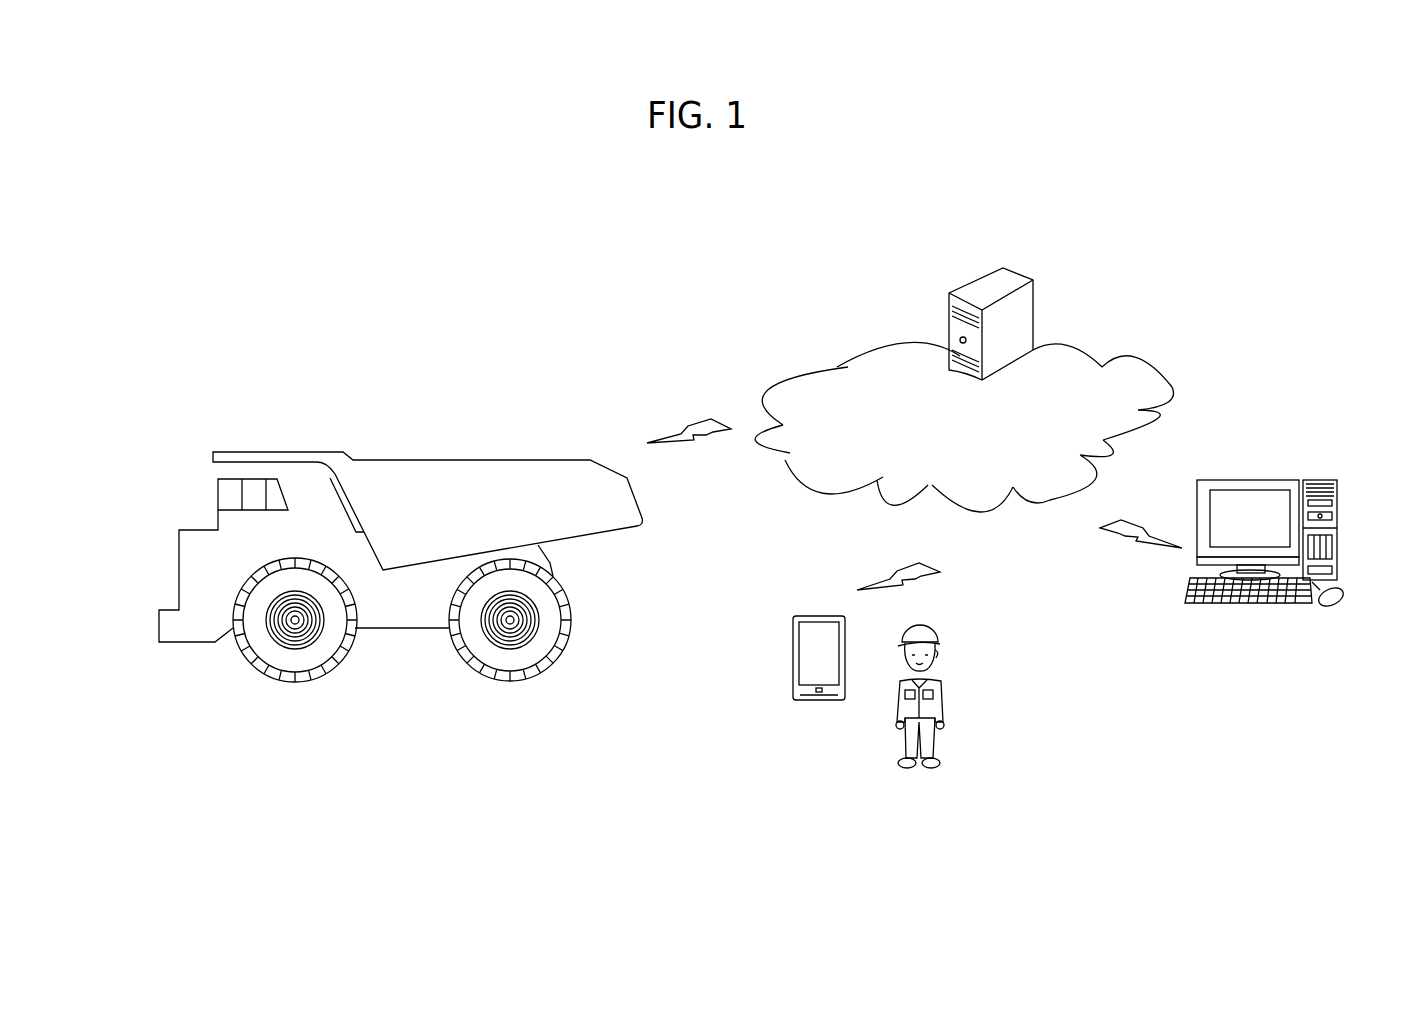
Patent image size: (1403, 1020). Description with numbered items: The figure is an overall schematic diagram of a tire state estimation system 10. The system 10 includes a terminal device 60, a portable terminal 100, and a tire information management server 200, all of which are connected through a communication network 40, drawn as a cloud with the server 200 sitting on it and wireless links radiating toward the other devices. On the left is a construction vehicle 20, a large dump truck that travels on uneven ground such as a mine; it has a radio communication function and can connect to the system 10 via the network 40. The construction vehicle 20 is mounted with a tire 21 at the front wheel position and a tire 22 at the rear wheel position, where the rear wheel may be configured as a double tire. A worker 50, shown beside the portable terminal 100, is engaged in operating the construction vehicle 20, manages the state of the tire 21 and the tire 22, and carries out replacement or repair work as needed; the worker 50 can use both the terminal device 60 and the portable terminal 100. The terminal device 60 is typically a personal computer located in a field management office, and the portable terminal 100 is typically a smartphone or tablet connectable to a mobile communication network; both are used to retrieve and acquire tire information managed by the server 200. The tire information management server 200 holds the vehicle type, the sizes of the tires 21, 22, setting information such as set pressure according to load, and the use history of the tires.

The tire state estimation system 10 is at (1190, 267).
The construction vehicle 20 is at (470, 470).
The tire 21 is at (302, 662).
The tire 22 is at (515, 663).
The communication network 40 is at (1077, 347).
The tire information management server 200 is at (1012, 278).
The terminal device 60 is at (1263, 477).
The portable terminal 100 is at (793, 647).
The worker 50 is at (943, 697).